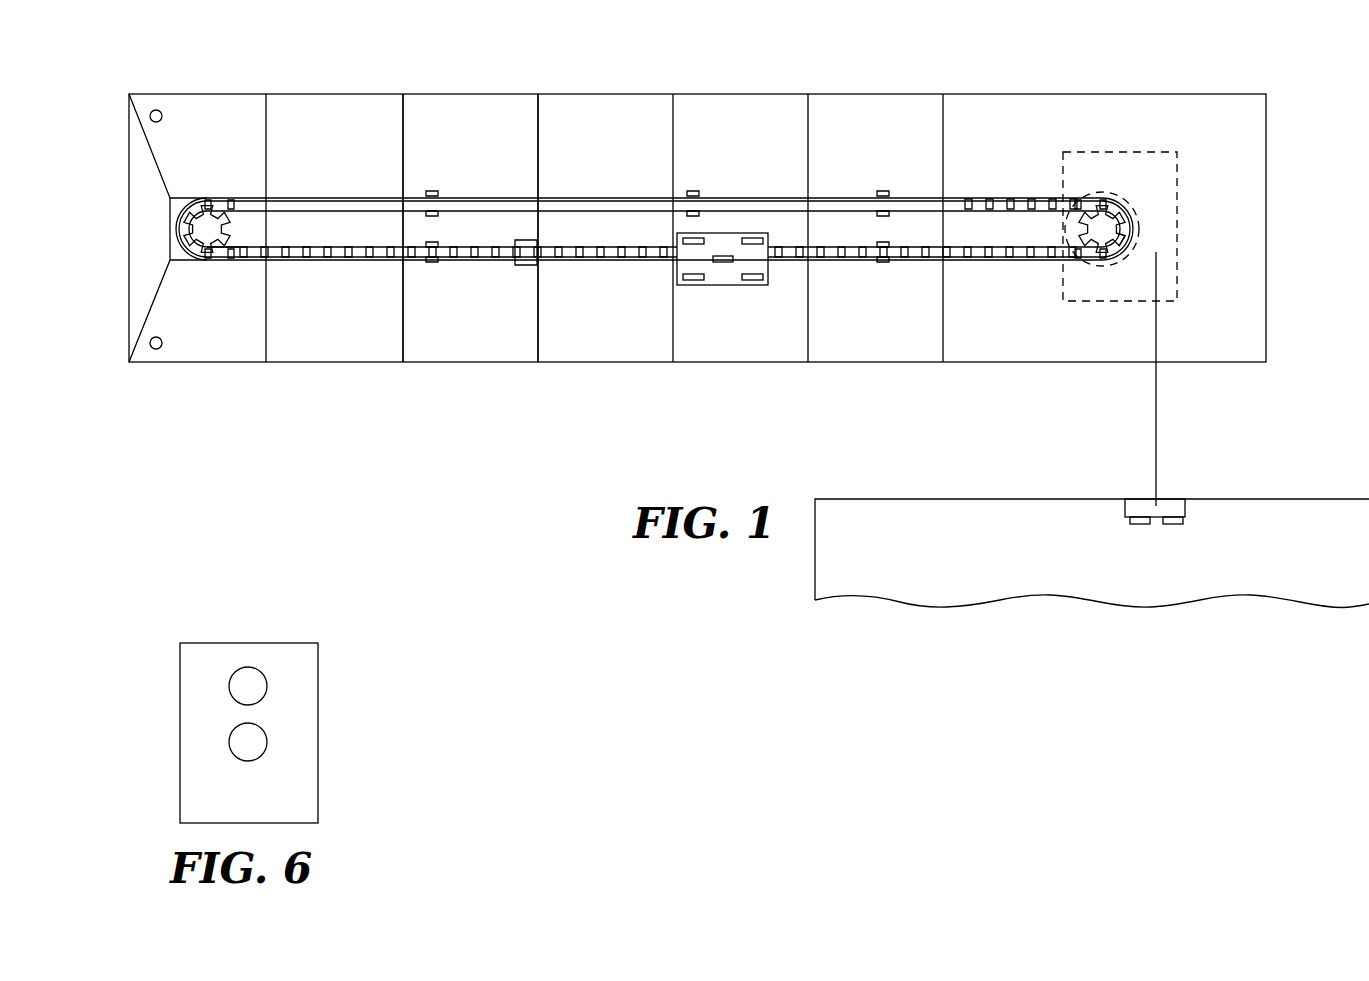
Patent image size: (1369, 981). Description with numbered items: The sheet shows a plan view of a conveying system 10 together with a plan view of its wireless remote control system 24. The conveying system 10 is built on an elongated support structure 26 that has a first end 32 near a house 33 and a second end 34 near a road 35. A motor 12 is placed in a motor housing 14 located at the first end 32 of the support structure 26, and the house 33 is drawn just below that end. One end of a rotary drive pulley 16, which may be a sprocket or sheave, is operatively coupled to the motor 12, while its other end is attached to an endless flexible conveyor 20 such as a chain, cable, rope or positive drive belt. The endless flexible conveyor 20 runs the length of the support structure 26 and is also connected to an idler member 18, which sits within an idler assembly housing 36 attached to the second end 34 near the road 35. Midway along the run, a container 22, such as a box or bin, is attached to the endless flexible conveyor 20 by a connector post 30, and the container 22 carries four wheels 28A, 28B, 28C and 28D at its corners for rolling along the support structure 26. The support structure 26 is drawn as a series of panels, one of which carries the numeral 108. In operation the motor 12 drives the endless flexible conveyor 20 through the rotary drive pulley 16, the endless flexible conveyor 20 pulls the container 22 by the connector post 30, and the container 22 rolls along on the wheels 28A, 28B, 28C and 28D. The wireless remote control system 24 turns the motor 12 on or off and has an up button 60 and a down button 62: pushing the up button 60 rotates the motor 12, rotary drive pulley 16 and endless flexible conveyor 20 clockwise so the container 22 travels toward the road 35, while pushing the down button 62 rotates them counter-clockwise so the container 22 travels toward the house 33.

In FIG. 1, the conveying system 10 is at (1300, 72).
In FIG. 1, the motor 12 is at (1133, 200).
In FIG. 1, the motor housing 14 is at (1138, 170).
In FIG. 1, the rotary drive pulley 16 is at (1105, 236).
In FIG. 1, the idler member 18 is at (205, 238).
In FIG. 1, the endless flexible conveyor 20 is at (558, 205).
In FIG. 1, the container 22 is at (740, 240).
In FIG. 6, the wireless remote control system 24 is at (332, 632).
In FIG. 1, the support structure 26 is at (497, 177).
In FIG. 1, the wheel 28A is at (755, 282).
In FIG. 1, the wheel 28B is at (757, 238).
In FIG. 1, the wheel 28C is at (693, 282).
In FIG. 1, the wheel 28D is at (686, 240).
In FIG. 1, the connector post 30 is at (720, 258).
In FIG. 1, the first end 32 is at (1118, 221).
In FIG. 1, the house 33 is at (997, 517).
In FIG. 1, the second end 34 is at (192, 230).
In FIG. 1, the road 35 is at (124, 394).
In FIG. 1, the idler assembly housing 36 is at (187, 219).
In FIG. 6, the up button 60 is at (257, 686).
In FIG. 6, the down button 62 is at (257, 742).
In FIG. 1, the panel section 108 is at (518, 115).